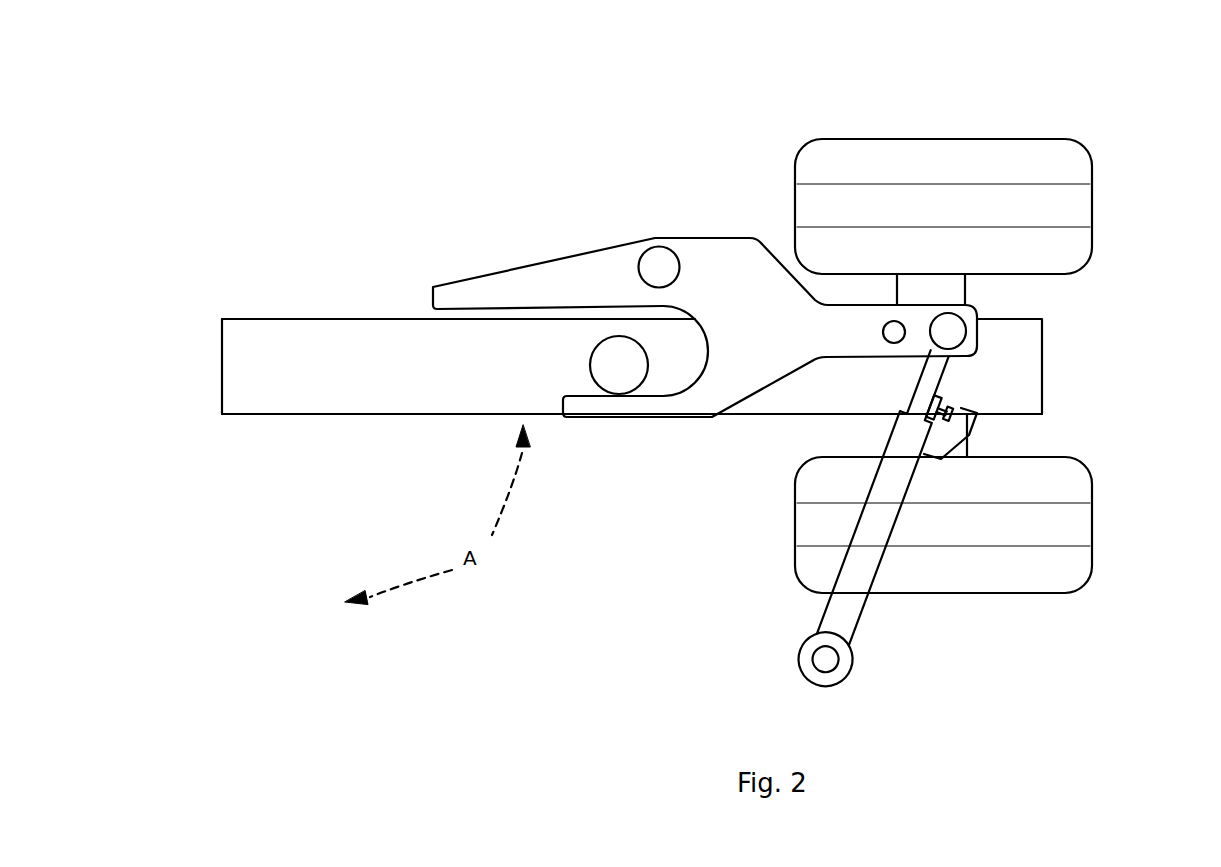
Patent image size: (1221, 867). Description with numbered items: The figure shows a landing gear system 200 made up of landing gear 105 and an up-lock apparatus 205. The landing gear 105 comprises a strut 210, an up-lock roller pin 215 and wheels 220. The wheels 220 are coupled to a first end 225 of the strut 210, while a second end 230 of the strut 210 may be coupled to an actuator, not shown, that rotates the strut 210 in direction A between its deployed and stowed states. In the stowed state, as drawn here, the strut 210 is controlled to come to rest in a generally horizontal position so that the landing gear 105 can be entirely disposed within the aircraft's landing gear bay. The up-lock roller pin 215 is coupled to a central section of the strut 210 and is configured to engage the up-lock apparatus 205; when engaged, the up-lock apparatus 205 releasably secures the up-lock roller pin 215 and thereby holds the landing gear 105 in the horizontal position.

The landing gear system 200 is at (271, 81).
The landing gear 105 is at (273, 318).
The up-lock apparatus 205 is at (603, 280).
The strut 210 is at (250, 386).
The up-lock roller pin 215 is at (602, 357).
The wheels 220 is at (1073, 162).
The first end 225 is at (1042, 360).
The second end 230 is at (257, 415).